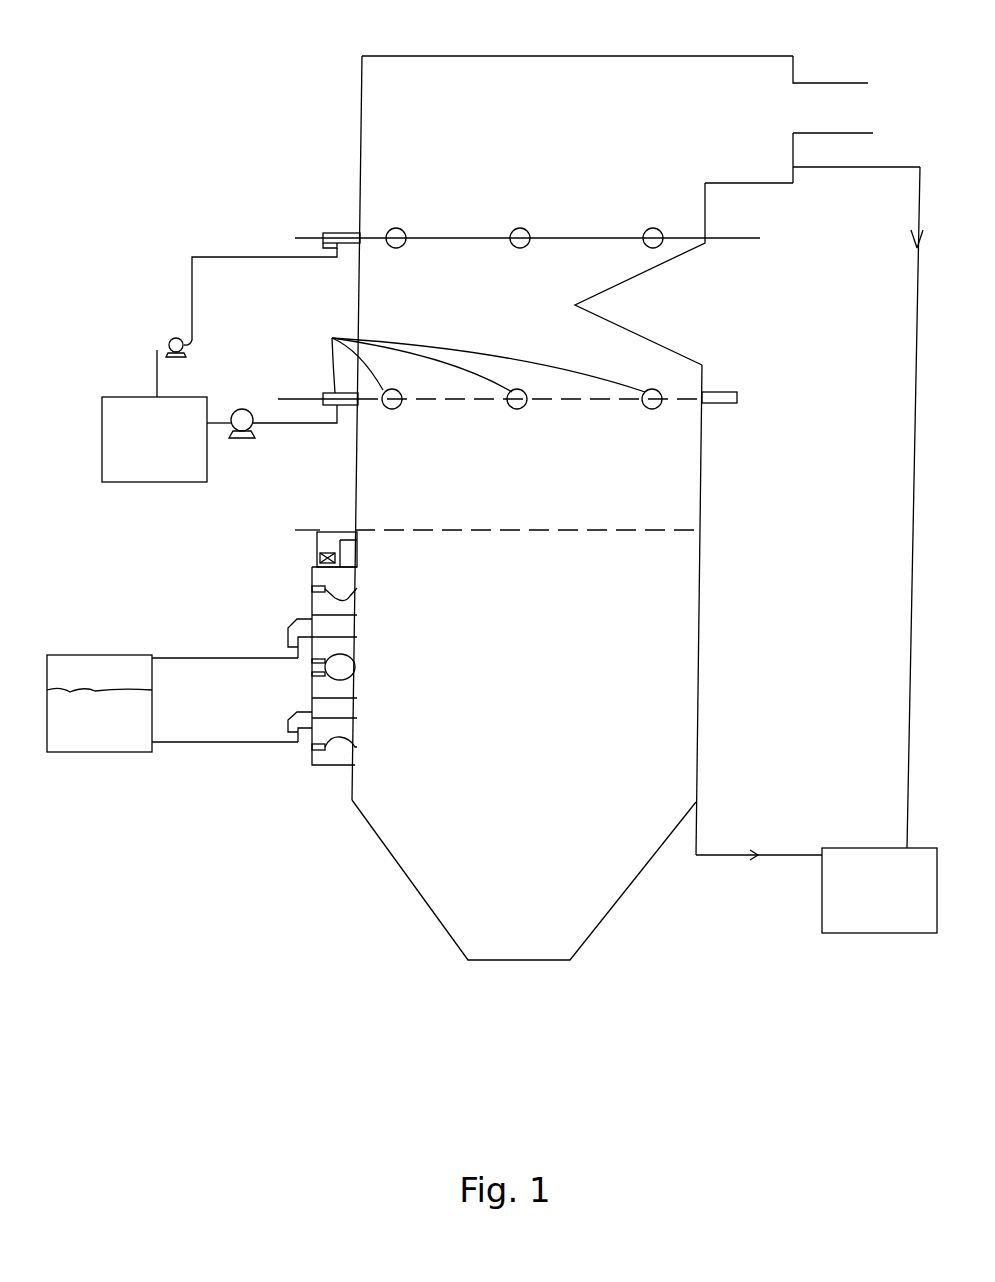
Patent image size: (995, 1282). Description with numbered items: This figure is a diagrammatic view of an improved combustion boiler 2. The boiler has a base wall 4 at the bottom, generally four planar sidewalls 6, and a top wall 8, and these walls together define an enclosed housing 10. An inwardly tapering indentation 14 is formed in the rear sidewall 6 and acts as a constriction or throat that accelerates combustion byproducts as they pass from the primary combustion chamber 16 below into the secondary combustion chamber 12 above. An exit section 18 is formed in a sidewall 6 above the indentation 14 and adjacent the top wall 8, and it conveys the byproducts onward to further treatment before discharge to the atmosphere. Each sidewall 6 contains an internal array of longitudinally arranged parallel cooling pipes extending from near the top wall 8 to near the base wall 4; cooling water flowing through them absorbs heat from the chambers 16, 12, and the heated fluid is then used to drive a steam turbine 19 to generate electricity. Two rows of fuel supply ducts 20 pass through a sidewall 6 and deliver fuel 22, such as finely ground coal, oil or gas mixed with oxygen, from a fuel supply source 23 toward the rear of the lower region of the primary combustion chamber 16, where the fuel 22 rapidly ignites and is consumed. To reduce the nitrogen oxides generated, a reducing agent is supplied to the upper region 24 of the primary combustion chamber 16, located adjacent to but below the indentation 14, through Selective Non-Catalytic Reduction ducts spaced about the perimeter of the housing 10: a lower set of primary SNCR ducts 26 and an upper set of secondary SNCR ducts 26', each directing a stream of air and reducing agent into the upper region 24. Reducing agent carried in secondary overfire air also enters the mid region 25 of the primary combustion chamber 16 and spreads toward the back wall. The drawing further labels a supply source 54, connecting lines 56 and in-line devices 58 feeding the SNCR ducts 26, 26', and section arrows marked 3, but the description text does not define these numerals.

The combustion boiler 2 is at (317, 530).
The section line arrows 3 is at (278, 399).
The base wall 4 is at (295, 238).
The sidewall 6 is at (350, 452).
The top wall 8 is at (533, 54).
The enclosed housing 10 is at (699, 637).
The secondary combustion chamber 12 is at (503, 198).
The inwardly tapering indentation 14 is at (623, 282).
The primary combustion chamber 16 is at (503, 590).
The exit section 18 is at (813, 105).
The steam turbine 19 is at (822, 902).
The fuel supply duct 20 is at (288, 622).
The fuel 22 is at (86, 723).
The fuel supply source 23 is at (117, 655).
The upper region of the primary combustion chamber 24 is at (535, 358).
The mid region of the primary combustion chamber 25 is at (497, 503).
The primary SNCR duct 26 is at (554, 357).
The secondary SNCR duct 26' is at (297, 233).
The supply source 54 is at (137, 482).
The supply conduit 56 is at (190, 287).
The pump 58 is at (210, 388).